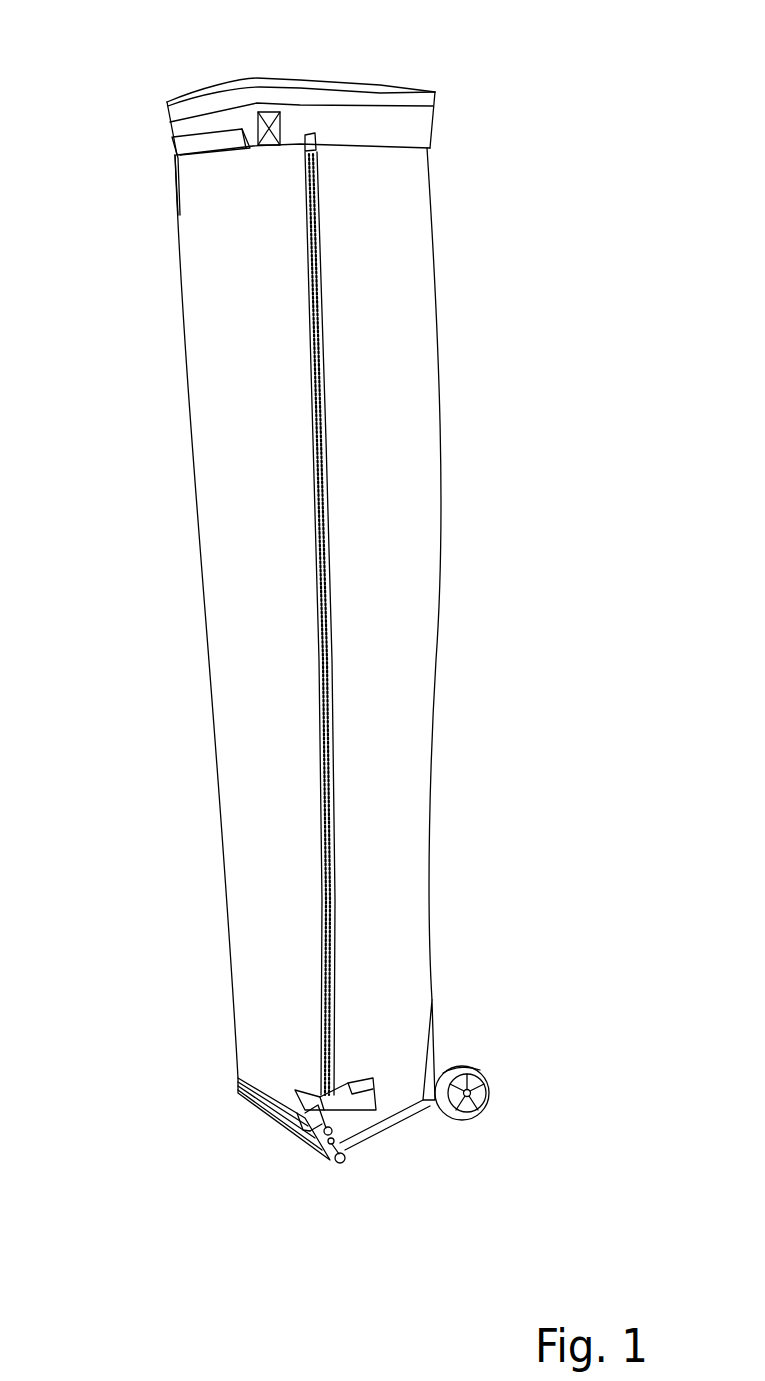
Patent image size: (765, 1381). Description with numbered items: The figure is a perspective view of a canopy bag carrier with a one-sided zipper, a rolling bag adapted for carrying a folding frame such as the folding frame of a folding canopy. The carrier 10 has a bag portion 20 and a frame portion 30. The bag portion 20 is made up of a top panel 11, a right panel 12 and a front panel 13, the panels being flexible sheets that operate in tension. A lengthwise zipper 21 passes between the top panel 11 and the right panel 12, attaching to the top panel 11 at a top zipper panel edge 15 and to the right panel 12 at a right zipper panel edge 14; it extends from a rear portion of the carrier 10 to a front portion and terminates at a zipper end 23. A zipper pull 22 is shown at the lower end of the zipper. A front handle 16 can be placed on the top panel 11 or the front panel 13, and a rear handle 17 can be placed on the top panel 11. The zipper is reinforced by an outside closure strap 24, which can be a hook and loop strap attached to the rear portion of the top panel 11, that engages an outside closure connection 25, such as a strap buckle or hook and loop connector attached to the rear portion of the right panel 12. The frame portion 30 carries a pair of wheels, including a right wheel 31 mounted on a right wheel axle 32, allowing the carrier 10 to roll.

The carrier 10 is at (352, 585).
The top panel 11 is at (248, 600).
The right panel 12 is at (395, 763).
The front panel 13 is at (177, 98).
The right zipper panel edge 14 is at (325, 623).
The top zipper panel edge 15 is at (308, 350).
The front handle 16 is at (180, 153).
The rear handle 17 is at (243, 1100).
The bag portion 20 is at (407, 360).
The lengthwise zipper 21 is at (332, 480).
The zipper pull 22 is at (335, 1163).
The zipper end 23 is at (303, 133).
The outside closure strap 24 is at (345, 1054).
The outside closure connection 25 is at (357, 1083).
The frame portion 30 is at (437, 1052).
The right wheel 31 is at (491, 1113).
The right wheel axle 32 is at (472, 1120).